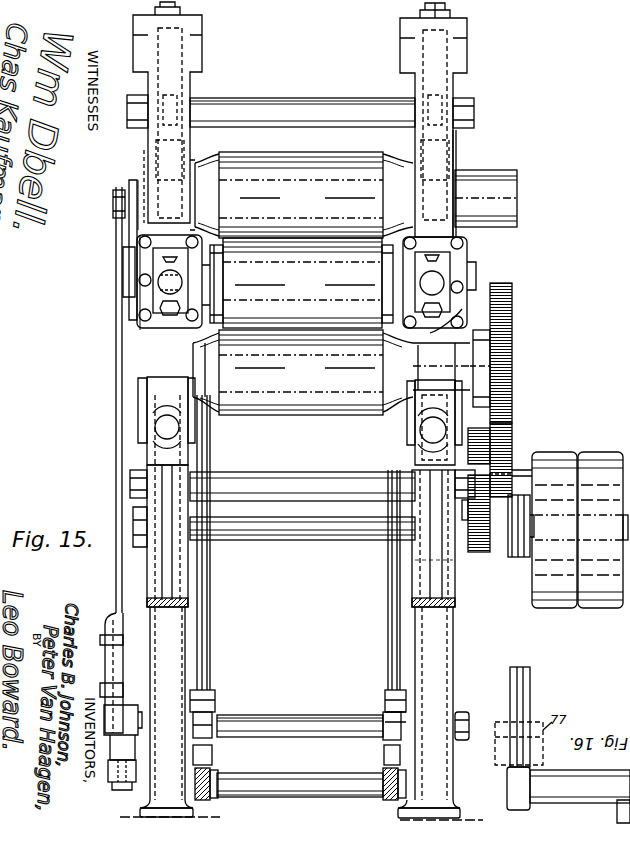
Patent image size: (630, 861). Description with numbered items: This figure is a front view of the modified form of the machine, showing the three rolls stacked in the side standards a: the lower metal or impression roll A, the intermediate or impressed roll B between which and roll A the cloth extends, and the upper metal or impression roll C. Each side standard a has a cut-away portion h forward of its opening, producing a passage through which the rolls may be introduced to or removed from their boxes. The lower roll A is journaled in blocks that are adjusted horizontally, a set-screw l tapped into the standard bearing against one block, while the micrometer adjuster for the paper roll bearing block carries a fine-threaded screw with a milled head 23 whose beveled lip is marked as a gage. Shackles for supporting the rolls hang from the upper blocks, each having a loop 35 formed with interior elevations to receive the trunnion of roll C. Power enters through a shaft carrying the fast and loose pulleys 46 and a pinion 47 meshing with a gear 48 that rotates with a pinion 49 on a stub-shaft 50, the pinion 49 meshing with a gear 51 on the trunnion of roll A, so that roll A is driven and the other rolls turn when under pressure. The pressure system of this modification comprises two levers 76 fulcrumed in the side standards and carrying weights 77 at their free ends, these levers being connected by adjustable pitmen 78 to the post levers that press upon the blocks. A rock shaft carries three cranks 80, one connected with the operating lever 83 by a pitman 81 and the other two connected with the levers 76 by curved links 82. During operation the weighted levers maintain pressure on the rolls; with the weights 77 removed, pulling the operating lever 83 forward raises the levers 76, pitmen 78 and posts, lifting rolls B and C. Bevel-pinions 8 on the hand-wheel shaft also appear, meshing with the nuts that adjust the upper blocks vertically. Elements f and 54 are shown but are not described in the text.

The weights 77 is at (451, 12).
The loop 35 is at (480, 185).
The milled head 23 is at (440, 278).
The gear 51 is at (512, 327).
The gear 48 is at (475, 428).
The pinion 49 is at (512, 450).
The stub-shaft 50 is at (528, 473).
The pinion 47 is at (478, 552).
The pulley 54 is at (518, 557).
The fast and loose pulleys 46 is at (570, 608).
The operating lever 83 is at (116, 577).
The adjustable pitmen 78 is at (207, 652).
The cranks 80 is at (190, 700).
The curved links 82 is at (195, 768).
The bevel-pinions 8 is at (288, 756).
The pitman 81 is at (115, 790).
The levers 76 is at (420, 805).
The lower impression roll A is at (331, 372).
The intermediate impressed roll B is at (301, 283).
The upper impression roll C is at (301, 195).
The removed portion of side-standard h is at (457, 318).
The set-screw l is at (425, 432).
The housing standard f is at (440, 585).
The side standard a is at (453, 668).